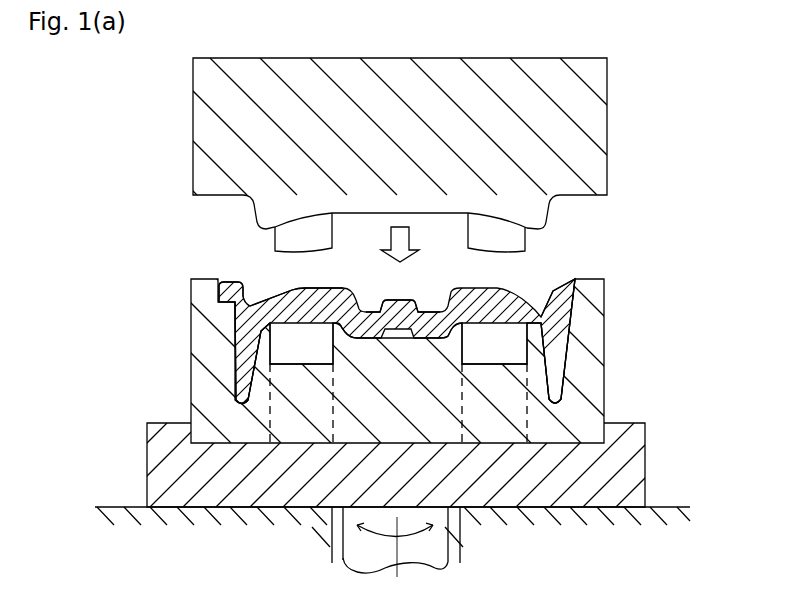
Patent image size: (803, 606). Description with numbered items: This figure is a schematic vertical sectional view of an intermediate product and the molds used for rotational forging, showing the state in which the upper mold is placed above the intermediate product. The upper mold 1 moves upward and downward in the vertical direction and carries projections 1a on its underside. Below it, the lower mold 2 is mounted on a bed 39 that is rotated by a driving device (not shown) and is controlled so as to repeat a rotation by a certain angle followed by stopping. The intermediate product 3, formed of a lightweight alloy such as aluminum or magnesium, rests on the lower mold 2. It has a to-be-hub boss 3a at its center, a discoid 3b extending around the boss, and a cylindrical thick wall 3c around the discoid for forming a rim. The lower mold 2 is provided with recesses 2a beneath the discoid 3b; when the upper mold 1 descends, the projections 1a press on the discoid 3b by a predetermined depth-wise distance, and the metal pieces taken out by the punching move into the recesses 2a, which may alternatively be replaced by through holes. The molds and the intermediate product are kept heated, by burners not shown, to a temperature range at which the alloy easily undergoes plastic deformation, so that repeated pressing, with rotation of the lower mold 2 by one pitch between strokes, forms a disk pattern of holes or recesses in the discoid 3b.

The upper mold 1 is at (378, 132).
The projections 1a is at (290, 240).
The lower mold 2 is at (390, 403).
The recesses 2a is at (287, 353).
The intermediate product 3 is at (399, 321).
The to-be-hub boss 3a is at (377, 303).
The discoid 3b is at (305, 303).
The cylindrical thick wall 3c is at (242, 343).
The bed 39 is at (630, 462).